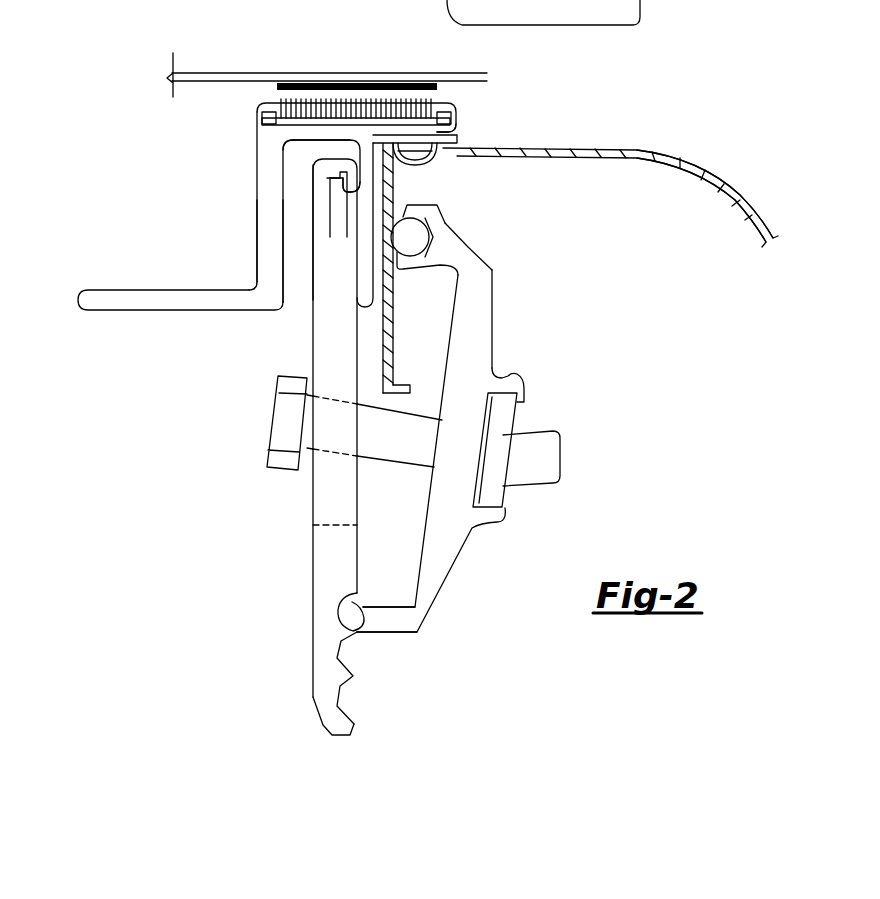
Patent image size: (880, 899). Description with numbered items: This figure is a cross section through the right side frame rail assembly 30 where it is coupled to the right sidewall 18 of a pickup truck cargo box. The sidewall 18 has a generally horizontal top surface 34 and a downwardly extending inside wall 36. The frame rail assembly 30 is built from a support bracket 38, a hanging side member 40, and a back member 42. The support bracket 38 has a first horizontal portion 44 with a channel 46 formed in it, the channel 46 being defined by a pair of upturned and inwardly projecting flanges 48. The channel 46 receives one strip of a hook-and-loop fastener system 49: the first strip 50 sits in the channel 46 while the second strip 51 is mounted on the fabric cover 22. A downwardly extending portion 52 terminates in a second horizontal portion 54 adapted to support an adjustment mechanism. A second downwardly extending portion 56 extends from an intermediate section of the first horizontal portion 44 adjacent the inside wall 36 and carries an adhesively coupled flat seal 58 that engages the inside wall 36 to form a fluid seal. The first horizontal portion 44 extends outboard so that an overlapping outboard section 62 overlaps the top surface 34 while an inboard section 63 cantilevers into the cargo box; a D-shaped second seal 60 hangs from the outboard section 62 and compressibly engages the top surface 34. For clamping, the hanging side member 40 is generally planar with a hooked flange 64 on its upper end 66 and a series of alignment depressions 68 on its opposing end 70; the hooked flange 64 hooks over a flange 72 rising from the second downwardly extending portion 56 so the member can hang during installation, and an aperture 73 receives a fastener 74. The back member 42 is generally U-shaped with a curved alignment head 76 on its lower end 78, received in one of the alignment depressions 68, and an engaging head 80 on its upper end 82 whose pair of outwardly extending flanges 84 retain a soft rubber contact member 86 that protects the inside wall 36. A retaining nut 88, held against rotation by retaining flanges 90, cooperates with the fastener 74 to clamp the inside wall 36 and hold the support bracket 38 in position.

The right sidewall 18 is at (640, 151).
The fabric cover 22 is at (216, 72).
The right side frame rail assembly 30 is at (475, 58).
The top surface 34 is at (578, 149).
The inside wall 36 is at (393, 366).
The support bracket 38 is at (262, 206).
The hanging side member 40 is at (313, 566).
The back member 42 is at (450, 578).
The first horizontal portion 44 is at (268, 143).
The channel 46 is at (257, 118).
The upturned and inwardly projecting flanges 48 is at (262, 100).
The hook-and-loop fastener system 49 is at (320, 72).
The first strip 50 is at (358, 110).
The second strip 51 is at (436, 83).
The downwardly extending portion 52 is at (266, 247).
The second horizontal portion 54 is at (134, 298).
The second downwardly extending portion 56 is at (366, 170).
The flat seal 58 is at (405, 200).
The second seal 60 is at (432, 160).
The overlapping outboard section 62 is at (456, 131).
The inboard section 63 is at (307, 150).
The hooked flange 64 is at (325, 170).
The upper end 66 is at (323, 258).
The alignment depressions 68 is at (352, 665).
The opposing end 70 is at (313, 672).
The flange 72 is at (338, 240).
The aperture 73 is at (340, 527).
The fastener 74 is at (274, 420).
The alignment head 76 is at (357, 605).
The lower end 78 is at (430, 613).
The engaging head 80 is at (440, 229).
The upper end 82 is at (492, 330).
The outwardly extending flanges 84 is at (410, 270).
The contact member 86 is at (440, 245).
The retaining nut 88 is at (503, 421).
The retaining flanges 90 is at (515, 377).